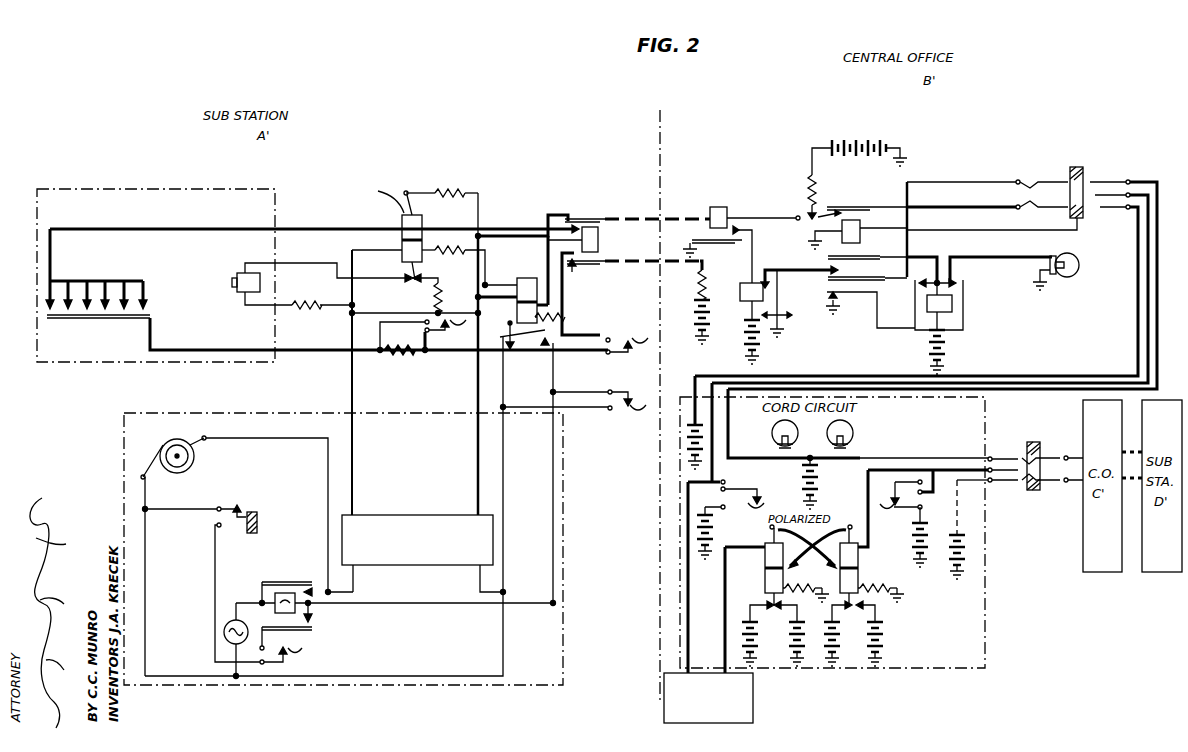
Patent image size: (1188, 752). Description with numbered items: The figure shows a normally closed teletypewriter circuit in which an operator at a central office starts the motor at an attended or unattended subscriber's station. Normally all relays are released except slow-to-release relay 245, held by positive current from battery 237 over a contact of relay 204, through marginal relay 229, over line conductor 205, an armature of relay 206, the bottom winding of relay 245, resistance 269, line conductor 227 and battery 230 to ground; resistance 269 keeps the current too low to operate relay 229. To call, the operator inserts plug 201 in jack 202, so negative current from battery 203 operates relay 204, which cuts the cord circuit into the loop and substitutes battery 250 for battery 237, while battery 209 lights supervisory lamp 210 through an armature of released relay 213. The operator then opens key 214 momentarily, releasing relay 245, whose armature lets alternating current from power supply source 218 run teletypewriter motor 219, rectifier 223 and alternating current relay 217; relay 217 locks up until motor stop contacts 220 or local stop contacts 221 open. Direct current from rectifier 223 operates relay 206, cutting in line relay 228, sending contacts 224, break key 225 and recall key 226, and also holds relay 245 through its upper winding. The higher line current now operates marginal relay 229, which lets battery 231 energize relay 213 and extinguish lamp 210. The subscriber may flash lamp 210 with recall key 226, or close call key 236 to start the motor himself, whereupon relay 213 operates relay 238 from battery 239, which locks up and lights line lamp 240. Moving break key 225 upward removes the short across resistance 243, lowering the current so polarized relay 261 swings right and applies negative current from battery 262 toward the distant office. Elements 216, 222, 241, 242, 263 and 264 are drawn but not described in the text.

The plug 201 is at (1116, 180).
The jack 202 is at (1068, 181).
The battery 203 is at (690, 446).
The relay 204 is at (851, 225).
The line conductor 205 is at (673, 218).
The relay 206 is at (589, 227).
The battery 209 is at (805, 491).
The supervisory lamp 210 is at (772, 436).
The relay 213 is at (749, 291).
The key 214 is at (758, 506).
The battery 216 is at (712, 535).
The alternating current relay 217 is at (285, 593).
The power supply source 218 is at (224, 633).
The teletypewriter motor 219 is at (195, 445).
The motor stop contacts 220 is at (236, 504).
The local stop contacts 221 is at (290, 656).
The resistance 222 is at (257, 520).
The rectifier 223 is at (458, 514).
The sending contacts 224 is at (140, 285).
The break key 225 is at (451, 334).
The recall key 226 is at (633, 352).
The line conductor 227 is at (672, 270).
The line relay 228 is at (401, 226).
The marginal relay 229 is at (729, 217).
The battery 230 is at (691, 328).
The battery 231 is at (742, 332).
The call key 236 is at (630, 408).
The battery 237 is at (867, 148).
The relay 238 is at (959, 326).
The battery 239 is at (948, 351).
The line lamp 240 is at (1079, 267).
The key 241 is at (240, 276).
The operator's position equipment 242 is at (753, 710).
The resistance 243 is at (418, 358).
The slow-to-release relay 245 is at (528, 290).
The battery 250 is at (885, 650).
The polarized relay 261 is at (765, 570).
The battery 262 is at (792, 630).
The polarized relay 263 is at (858, 570).
The battery 264 is at (836, 630).
The resistance 269 is at (558, 315).